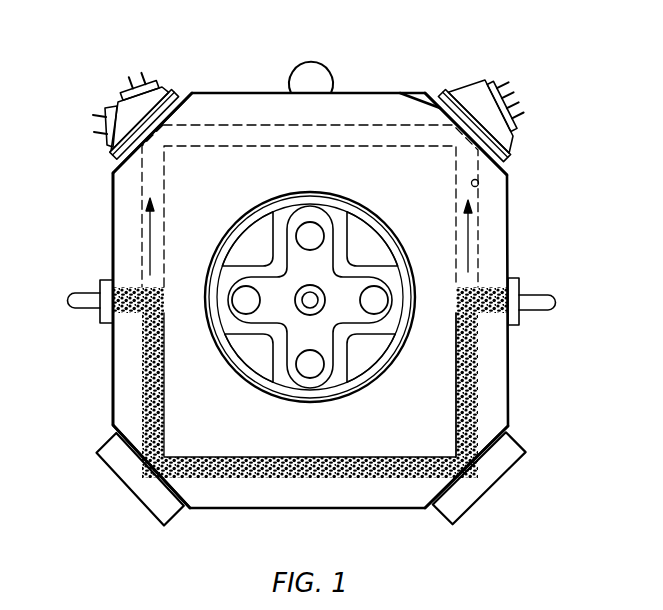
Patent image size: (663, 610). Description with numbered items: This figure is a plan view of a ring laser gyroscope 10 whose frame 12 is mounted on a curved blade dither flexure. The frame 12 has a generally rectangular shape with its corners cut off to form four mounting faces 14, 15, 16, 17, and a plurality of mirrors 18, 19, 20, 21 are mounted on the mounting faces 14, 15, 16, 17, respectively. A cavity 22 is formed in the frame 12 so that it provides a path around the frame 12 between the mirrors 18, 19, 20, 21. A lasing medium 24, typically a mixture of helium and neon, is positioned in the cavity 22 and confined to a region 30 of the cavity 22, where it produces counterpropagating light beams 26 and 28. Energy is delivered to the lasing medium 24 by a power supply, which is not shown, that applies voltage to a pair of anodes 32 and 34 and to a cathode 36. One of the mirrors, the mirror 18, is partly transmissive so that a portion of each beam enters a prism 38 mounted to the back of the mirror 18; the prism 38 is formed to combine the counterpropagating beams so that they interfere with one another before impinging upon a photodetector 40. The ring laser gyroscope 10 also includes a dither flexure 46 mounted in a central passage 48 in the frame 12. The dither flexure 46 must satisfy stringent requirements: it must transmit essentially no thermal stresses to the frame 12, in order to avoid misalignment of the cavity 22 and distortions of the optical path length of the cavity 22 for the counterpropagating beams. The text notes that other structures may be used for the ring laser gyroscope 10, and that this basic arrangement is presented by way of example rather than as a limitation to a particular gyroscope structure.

The ring laser gyroscope 10 is at (96, 403).
The frame 12 is at (113, 212).
The mounting face 14 is at (505, 167).
The mounting face 15 is at (503, 433).
The mounting face 16 is at (187, 508).
The mounting face 17 is at (112, 170).
The mirror 18 is at (428, 92).
The mirror 19 is at (430, 509).
The mirror 20 is at (121, 434).
The mirror 21 is at (170, 92).
The cavity 22 is at (480, 185).
The lasing medium 24 is at (295, 476).
The counterpropagating light beam 26 is at (152, 232).
The counterpropagating light beam 28 is at (466, 232).
The region 30 is at (494, 377).
The anode 32 is at (519, 288).
The anode 34 is at (100, 287).
The cathode 36 is at (329, 74).
The prism 38 is at (486, 83).
The photodetector 40 is at (521, 120).
The dither flexure 46 is at (300, 341).
The central passage 48 is at (215, 325).